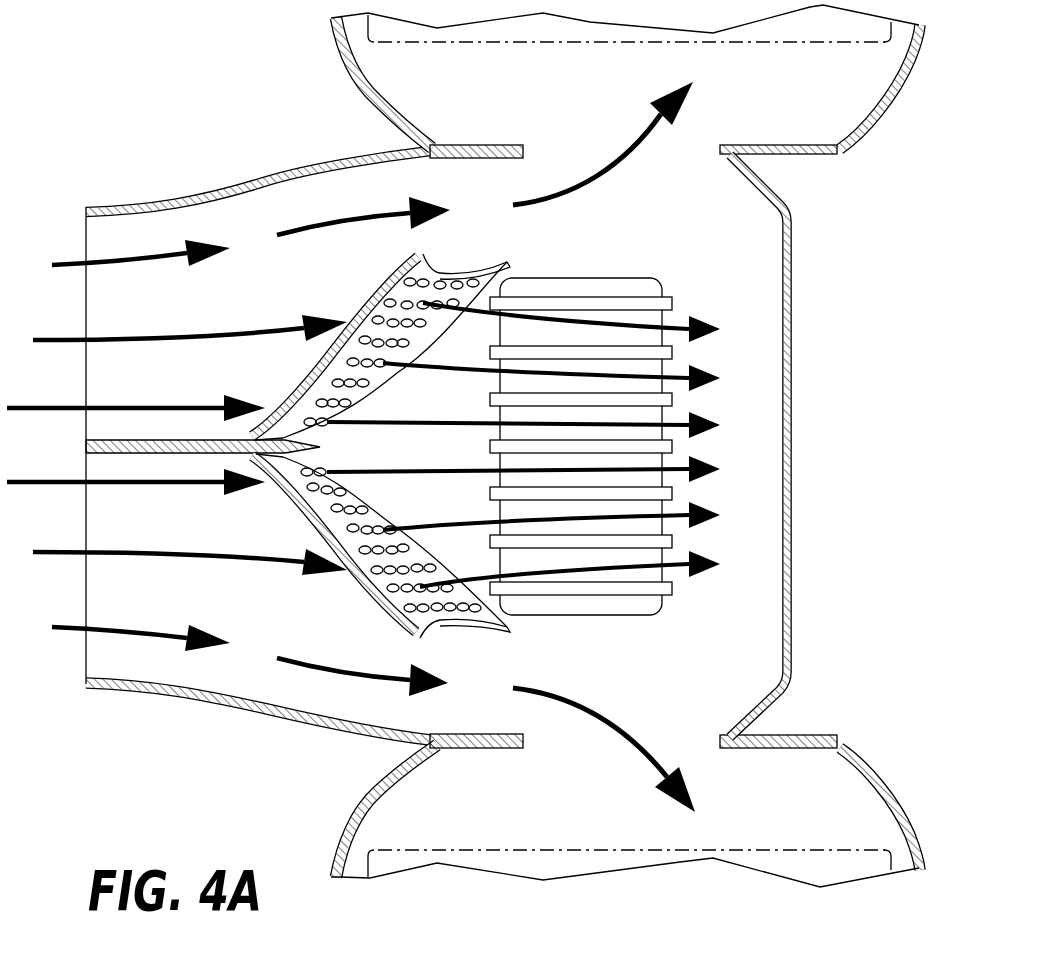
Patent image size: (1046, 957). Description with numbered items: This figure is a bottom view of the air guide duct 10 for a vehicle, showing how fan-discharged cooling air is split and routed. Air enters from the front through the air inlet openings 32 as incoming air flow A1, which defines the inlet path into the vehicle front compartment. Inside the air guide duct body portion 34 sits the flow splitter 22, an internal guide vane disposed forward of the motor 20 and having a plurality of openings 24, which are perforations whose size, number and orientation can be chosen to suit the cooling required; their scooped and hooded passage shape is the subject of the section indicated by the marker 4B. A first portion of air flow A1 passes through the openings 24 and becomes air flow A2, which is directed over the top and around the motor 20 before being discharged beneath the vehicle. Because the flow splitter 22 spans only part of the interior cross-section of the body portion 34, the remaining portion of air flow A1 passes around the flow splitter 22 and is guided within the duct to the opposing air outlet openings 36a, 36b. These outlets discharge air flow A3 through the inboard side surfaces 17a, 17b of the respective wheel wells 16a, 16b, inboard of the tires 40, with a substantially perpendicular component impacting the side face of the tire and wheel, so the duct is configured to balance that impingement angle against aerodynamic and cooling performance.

The air guide duct 10 is at (170, 181).
The air inlet opening 32 is at (100, 238).
The wheel well 16a is at (817, 110).
The wheel well 16b is at (808, 783).
The inboard side surface 17a is at (483, 147).
The inboard side surface 17b is at (478, 748).
The air outlet opening 36a is at (700, 153).
The air outlet opening 36b is at (700, 748).
The air guide duct body portion 34 is at (790, 433).
The tire 40 is at (562, 42).
The motor 20 is at (603, 277).
The flow splitter 22 is at (363, 583).
The openings 24 is at (403, 293).
The section view indicator 4B is at (430, 307).
The air flow A1 is at (158, 381).
The air flow A2 is at (427, 398).
The air flow A3 is at (609, 157).